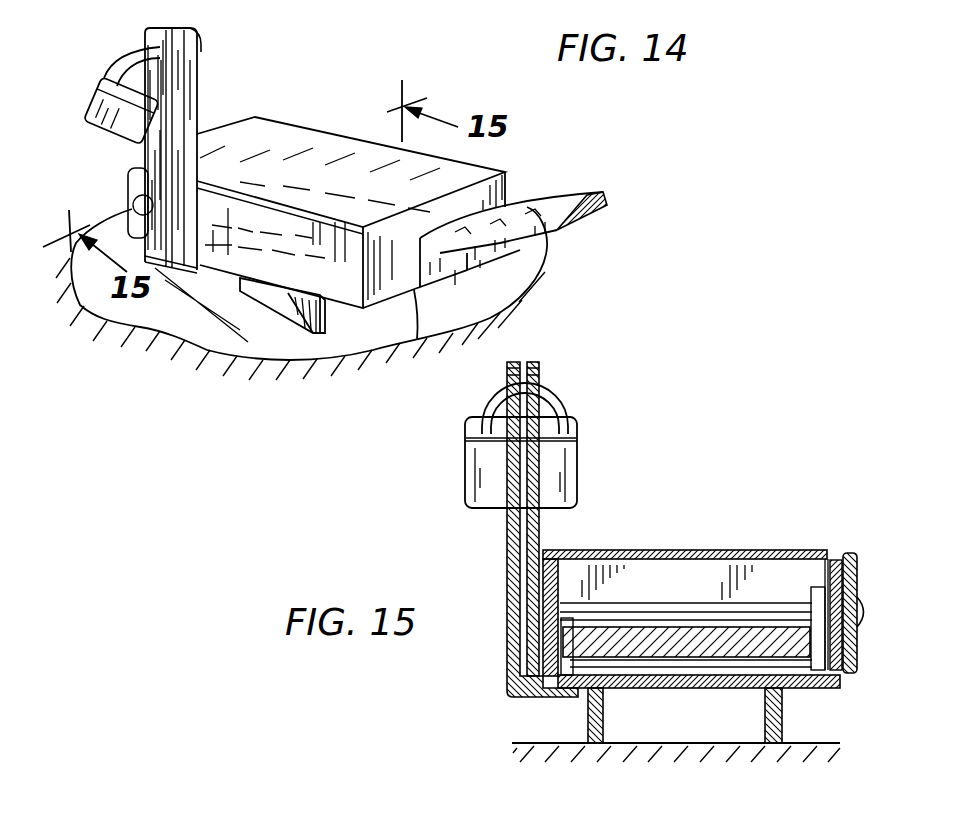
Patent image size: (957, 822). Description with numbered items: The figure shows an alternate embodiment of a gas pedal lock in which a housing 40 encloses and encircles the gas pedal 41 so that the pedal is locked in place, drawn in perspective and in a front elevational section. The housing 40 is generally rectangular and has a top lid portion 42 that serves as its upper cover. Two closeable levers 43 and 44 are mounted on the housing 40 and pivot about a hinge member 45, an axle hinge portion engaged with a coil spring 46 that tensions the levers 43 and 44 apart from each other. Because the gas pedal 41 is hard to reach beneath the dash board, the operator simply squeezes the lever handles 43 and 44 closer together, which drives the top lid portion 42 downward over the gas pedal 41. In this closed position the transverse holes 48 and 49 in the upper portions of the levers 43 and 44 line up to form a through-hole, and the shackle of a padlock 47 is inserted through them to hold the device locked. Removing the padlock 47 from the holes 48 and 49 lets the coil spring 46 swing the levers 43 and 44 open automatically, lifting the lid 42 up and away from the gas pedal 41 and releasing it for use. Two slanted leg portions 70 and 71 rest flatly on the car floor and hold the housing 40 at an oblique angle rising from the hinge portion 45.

In FIG. 14, the housing 40 is at (507, 174).
In FIG. 15, the housing 40 is at (847, 554).
In FIG. 14, the gas pedal 41 is at (347, 190).
In FIG. 15, the gas pedal 41 is at (677, 640).
In FIG. 14, the top lid portion 42 is at (315, 128).
In FIG. 14, the closeable lever 43 is at (173, 133).
In FIG. 15, the closeable lever 43 is at (541, 534).
In FIG. 14, the further lever 44 is at (150, 132).
In FIG. 15, the further lever 44 is at (512, 537).
In FIG. 14, the hinge member 45 is at (133, 198).
In FIG. 15, the hinge member 45 is at (864, 608).
In FIG. 15, the coil spring 46 is at (827, 560).
In FIG. 14, the padlock 47 is at (97, 103).
In FIG. 15, the padlock 47 is at (579, 473).
In FIG. 14, the transverse hole 48 is at (147, 44).
In FIG. 15, the transverse hole 48 is at (505, 372).
In FIG. 14, the transverse hole 49 is at (190, 36).
In FIG. 15, the transverse hole 49 is at (541, 376).
In FIG. 14, the slanted leg portion 70 is at (293, 296).
In FIG. 15, the slanted leg portion 70 is at (596, 718).
In FIG. 14, the slanted leg portion 71 is at (417, 340).
In FIG. 15, the slanted leg portion 71 is at (776, 715).